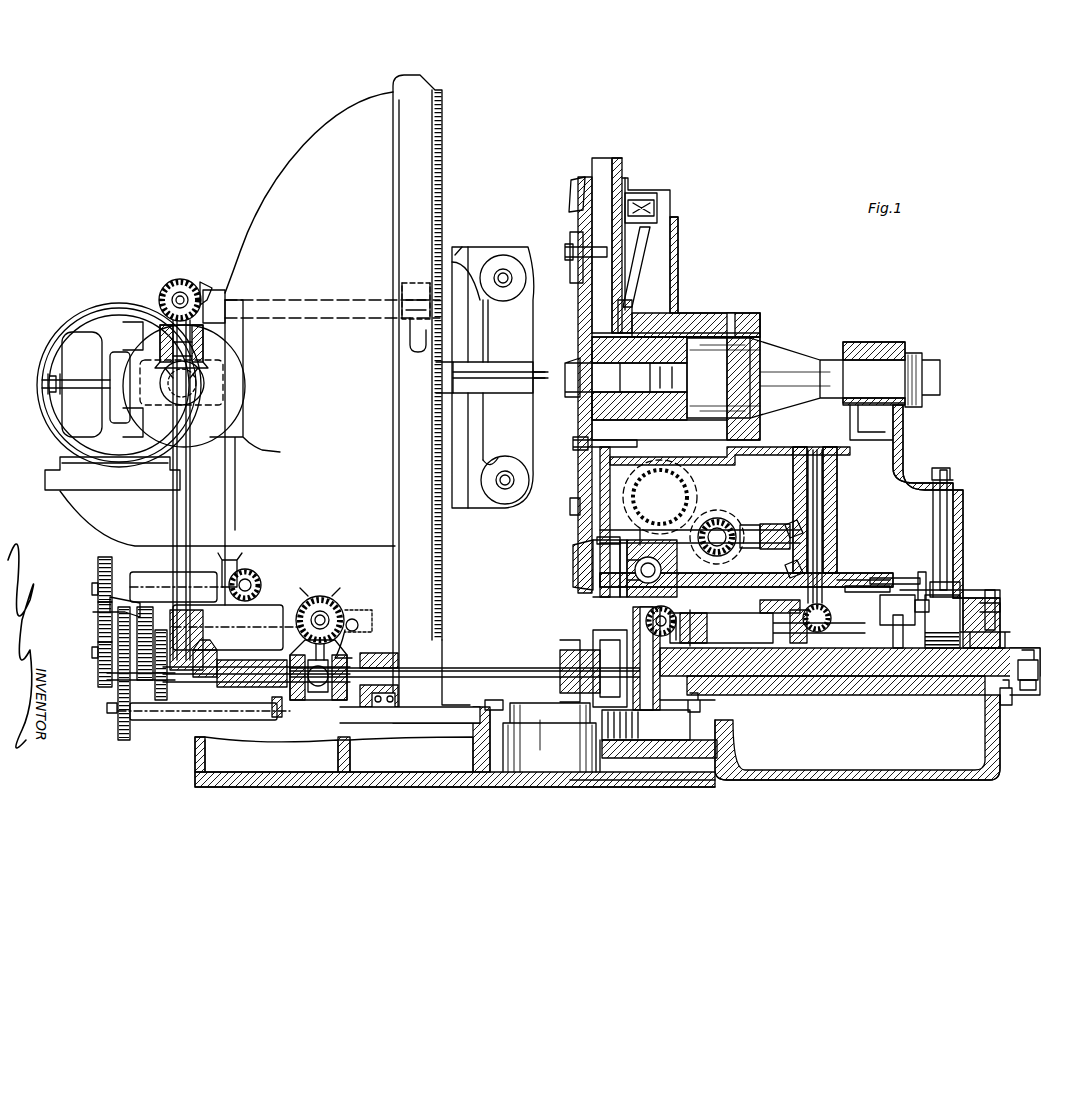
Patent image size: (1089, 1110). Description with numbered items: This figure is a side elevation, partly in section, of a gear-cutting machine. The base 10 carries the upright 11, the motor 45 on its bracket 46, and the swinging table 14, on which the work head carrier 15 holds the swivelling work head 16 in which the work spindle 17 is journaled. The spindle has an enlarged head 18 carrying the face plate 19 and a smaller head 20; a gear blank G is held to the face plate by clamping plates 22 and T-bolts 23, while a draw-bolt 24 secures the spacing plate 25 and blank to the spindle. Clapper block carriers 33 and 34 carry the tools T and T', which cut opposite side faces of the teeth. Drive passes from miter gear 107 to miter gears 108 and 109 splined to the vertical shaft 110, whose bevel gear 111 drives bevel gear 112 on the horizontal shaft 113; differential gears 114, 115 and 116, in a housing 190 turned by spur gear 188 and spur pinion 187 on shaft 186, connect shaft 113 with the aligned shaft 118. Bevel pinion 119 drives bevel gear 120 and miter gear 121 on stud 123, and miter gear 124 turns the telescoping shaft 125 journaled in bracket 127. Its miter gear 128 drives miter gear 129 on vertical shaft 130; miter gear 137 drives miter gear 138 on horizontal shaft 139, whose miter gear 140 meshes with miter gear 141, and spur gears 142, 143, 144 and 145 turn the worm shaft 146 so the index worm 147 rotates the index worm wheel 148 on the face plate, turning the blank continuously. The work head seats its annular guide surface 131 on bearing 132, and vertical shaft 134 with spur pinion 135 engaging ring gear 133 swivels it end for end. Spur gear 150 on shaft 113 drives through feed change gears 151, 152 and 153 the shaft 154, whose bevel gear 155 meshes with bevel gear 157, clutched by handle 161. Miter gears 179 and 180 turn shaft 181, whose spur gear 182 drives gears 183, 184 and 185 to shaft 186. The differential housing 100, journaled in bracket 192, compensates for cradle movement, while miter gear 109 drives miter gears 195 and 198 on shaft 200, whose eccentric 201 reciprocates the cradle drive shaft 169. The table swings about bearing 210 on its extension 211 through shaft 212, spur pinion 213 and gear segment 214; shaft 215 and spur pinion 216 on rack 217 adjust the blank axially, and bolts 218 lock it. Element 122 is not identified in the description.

The base 10 is at (1000, 738).
The upright 11 is at (258, 246).
The swinging table 14 is at (1040, 654).
The work head carrier 15 is at (968, 603).
The work head 16 is at (902, 456).
The work spindle 17 is at (781, 346).
The enlarged head 18 is at (624, 300).
The face plate 19 is at (622, 160).
The smaller head 20 is at (914, 350).
The clamping plates 22 is at (574, 528).
The T-bolts 23 is at (578, 254).
The draw-bolt 24 is at (626, 384).
The spacing plate 25 is at (587, 446).
The clapper block carrier 33 is at (522, 330).
The clapper block carrier 34 is at (528, 435).
The motor 45 is at (48, 368).
The bracket 46 is at (92, 505).
The differential housing 100 is at (160, 388).
The miter gear 107 is at (195, 395).
The miter gear 108 is at (205, 355).
The miter gear 109 is at (205, 334).
The vertical shaft 110 is at (191, 500).
The bevel gear 111 is at (204, 660).
The bevel gear 112 is at (203, 679).
The horizontal shaft 113 is at (256, 663).
The bevel gear 114 is at (292, 703).
The differential gear 115 is at (322, 703).
The differential gear 116 is at (352, 697).
The aligned shaft 118 is at (496, 668).
The bevel pinion 119 is at (585, 650).
The bevel gear 120 is at (700, 712).
The miter gear 121 is at (632, 627).
The bevel gear 122 is at (668, 613).
The stud 123 is at (604, 636).
The miter gear 124 is at (699, 634).
The telescoping shaft 125 is at (767, 622).
The bracket 127 is at (793, 632).
The miter gear 128 is at (823, 629).
The miter gear 129 is at (850, 580).
The vertical shaft 130 is at (825, 532).
The annular guide surface 131 is at (882, 580).
The bearing 132 is at (771, 606).
The ring gear 133 is at (922, 585).
The vertical shaft 134 is at (941, 527).
The spur pinion 135 is at (960, 582).
The miter gear 137 is at (838, 566).
The miter gear 138 is at (794, 524).
The horizontal shaft 139 is at (757, 536).
The miter gear 140 is at (750, 510).
The miter gear 141 is at (717, 532).
The spur gear 142 is at (722, 510).
The spur gear 143 is at (689, 490).
The spur gear 144 is at (679, 480).
The spur gear 145 is at (615, 606).
The worm shaft 146 is at (625, 598).
The index worm 147 is at (590, 580).
The index worm wheel 148 is at (672, 212).
The spur gear 150 is at (144, 653).
The spur gear 151 is at (158, 628).
The spur gear 152 is at (112, 690).
The spur gear 153 is at (110, 605).
The shaft 154 is at (256, 625).
The bevel gear 155 is at (321, 597).
The bevel gear 157 is at (346, 612).
The handle 161 is at (360, 623).
The cradle drive shaft 169 is at (405, 345).
The miter gear 179 is at (262, 580).
The miter gear 180 is at (238, 566).
The shaft 181 is at (145, 586).
The spur gear 182 is at (98, 563).
The spur gear 183 is at (100, 634).
The spur gear 184 is at (99, 672).
The spur gear 185 is at (120, 741).
The shaft 186 is at (190, 715).
The spur pinion 187 is at (275, 718).
The spur gear 188 is at (252, 661).
The housing 190 is at (355, 642).
The bracket 192 is at (240, 440).
The miter gear 195 is at (168, 283).
The miter gear 198 is at (205, 284).
The shaft 200 is at (297, 298).
The eccentric 201 is at (418, 290).
The bearing 210 is at (536, 703).
The extension 211 is at (484, 736).
The shaft 212 is at (1038, 668).
The spur pinion 213 is at (1036, 685).
The spur gear segment 214 is at (1012, 697).
The shaft 215 is at (996, 604).
The spur pinion 216 is at (985, 650).
The rack 217 is at (942, 621).
The bolts 218 is at (897, 621).
The gear blank G is at (575, 178).
The tool T is at (496, 369).
The tool T' is at (542, 392).